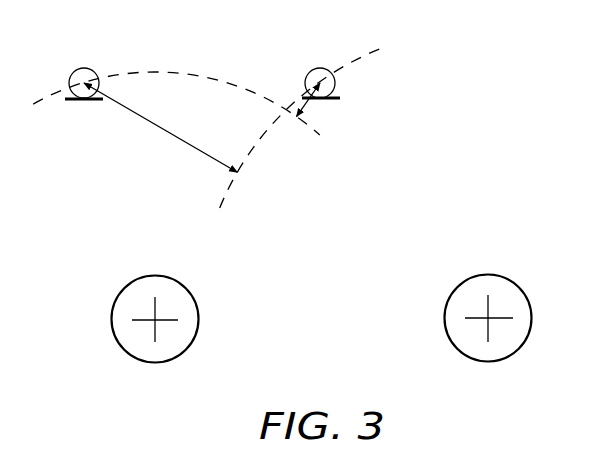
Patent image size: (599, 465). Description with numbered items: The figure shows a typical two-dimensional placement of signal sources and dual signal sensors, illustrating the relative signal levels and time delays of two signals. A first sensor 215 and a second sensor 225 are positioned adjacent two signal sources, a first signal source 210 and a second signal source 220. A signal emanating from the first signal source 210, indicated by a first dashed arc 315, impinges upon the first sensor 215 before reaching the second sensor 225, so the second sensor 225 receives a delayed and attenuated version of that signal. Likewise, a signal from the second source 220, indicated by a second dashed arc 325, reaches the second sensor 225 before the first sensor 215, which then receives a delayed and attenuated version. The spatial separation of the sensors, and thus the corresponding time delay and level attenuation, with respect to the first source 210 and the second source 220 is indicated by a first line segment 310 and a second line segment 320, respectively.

The first signal source 210 is at (155, 363).
The second signal source 220 is at (488, 362).
The first signal sensor 215 is at (85, 67).
The second signal sensor 225 is at (321, 67).
The first line segment 310 is at (153, 131).
The first dashed arc 315 is at (187, 73).
The second line segment 320 is at (310, 101).
The second dashed arc 325 is at (259, 141).